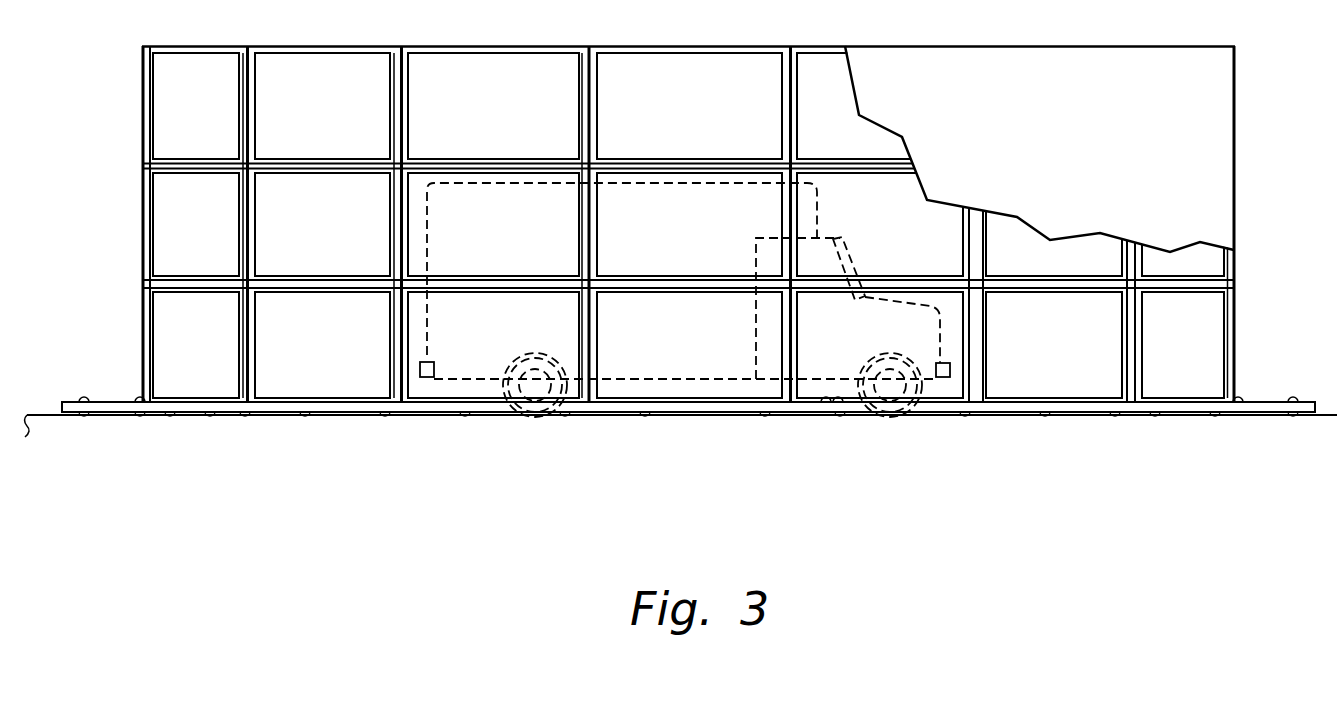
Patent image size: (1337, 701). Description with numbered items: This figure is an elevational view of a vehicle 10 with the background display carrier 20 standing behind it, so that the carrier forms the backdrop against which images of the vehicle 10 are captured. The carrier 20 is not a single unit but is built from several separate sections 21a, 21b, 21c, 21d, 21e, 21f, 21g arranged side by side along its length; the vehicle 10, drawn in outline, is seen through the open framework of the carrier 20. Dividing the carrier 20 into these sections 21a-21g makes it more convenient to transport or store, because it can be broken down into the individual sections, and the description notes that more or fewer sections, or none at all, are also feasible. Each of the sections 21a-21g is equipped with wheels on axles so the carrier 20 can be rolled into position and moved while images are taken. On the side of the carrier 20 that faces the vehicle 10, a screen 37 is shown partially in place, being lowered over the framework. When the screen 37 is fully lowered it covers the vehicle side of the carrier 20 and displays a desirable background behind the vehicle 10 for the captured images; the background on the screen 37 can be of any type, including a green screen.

The background display carrier 20 is at (139, 80).
The section 21a is at (193, 405).
The section 21b is at (316, 405).
The section 21c is at (485, 405).
The section 21d is at (680, 405).
The section 21e is at (926, 405).
The section 21f is at (1069, 405).
The section 21g is at (1183, 405).
The screen 37 is at (1076, 143).
The vehicle 10 is at (833, 239).